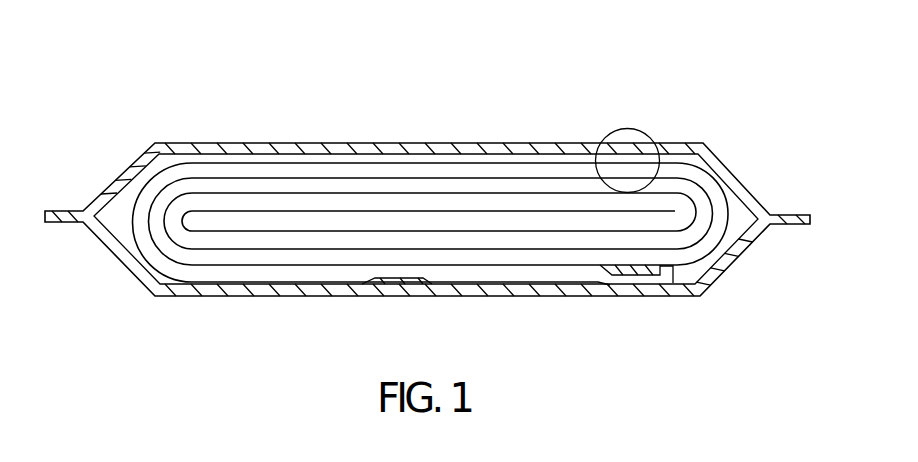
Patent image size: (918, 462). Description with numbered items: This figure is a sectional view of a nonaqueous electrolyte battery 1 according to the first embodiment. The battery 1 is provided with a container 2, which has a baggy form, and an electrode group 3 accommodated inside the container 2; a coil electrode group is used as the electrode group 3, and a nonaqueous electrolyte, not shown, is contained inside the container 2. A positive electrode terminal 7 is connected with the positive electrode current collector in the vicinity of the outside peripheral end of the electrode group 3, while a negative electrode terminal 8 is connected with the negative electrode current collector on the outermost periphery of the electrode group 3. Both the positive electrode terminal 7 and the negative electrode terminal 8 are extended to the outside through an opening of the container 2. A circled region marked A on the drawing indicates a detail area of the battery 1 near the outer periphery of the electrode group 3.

The battery 1 is at (512, 66).
The container 2 is at (460, 150).
The electrode group 3 is at (254, 168).
The positive electrode terminal 7 is at (632, 278).
The negative electrode terminal 8 is at (405, 285).
The detail region A is at (628, 128).